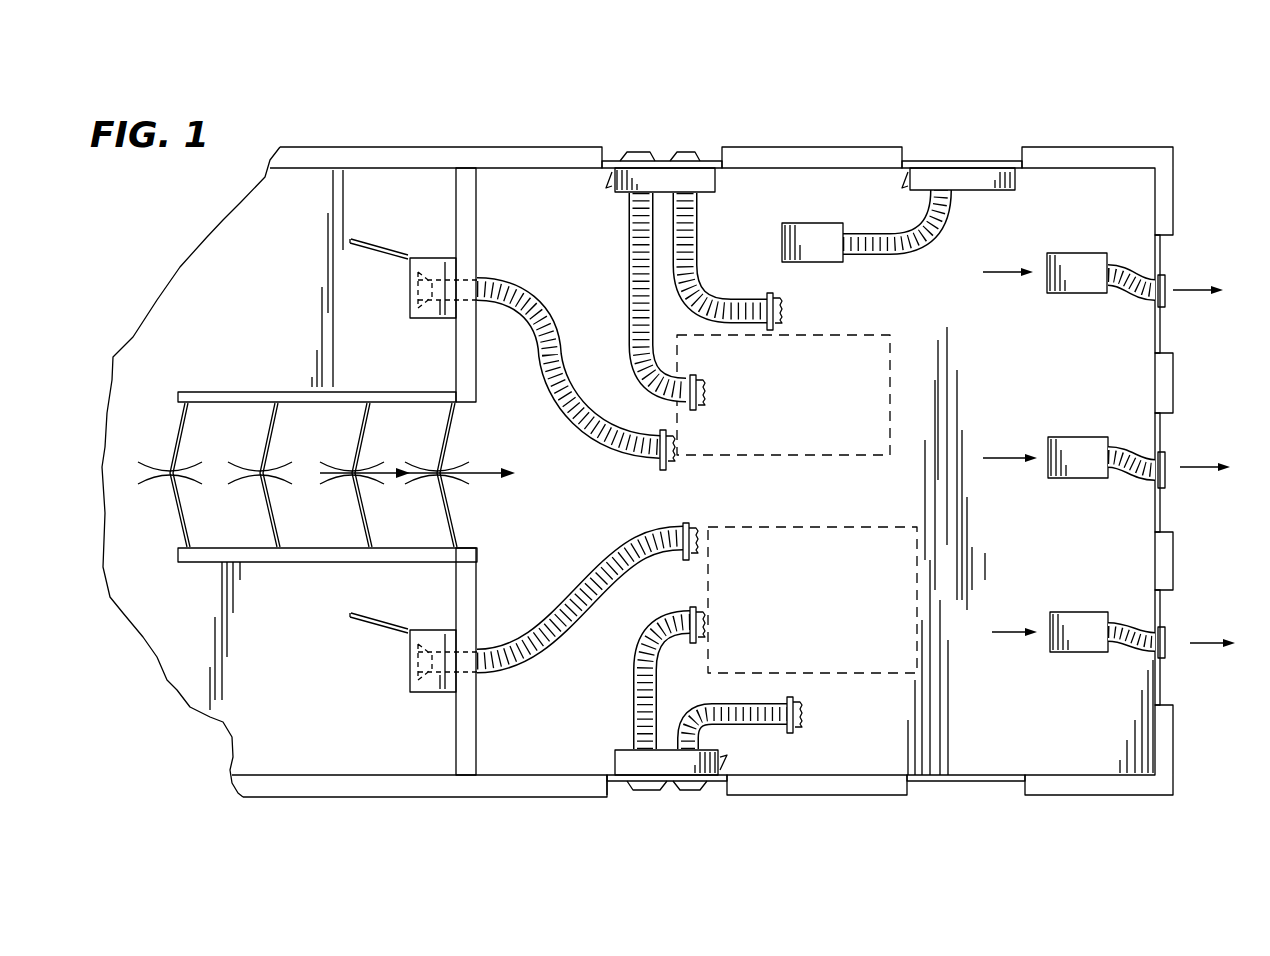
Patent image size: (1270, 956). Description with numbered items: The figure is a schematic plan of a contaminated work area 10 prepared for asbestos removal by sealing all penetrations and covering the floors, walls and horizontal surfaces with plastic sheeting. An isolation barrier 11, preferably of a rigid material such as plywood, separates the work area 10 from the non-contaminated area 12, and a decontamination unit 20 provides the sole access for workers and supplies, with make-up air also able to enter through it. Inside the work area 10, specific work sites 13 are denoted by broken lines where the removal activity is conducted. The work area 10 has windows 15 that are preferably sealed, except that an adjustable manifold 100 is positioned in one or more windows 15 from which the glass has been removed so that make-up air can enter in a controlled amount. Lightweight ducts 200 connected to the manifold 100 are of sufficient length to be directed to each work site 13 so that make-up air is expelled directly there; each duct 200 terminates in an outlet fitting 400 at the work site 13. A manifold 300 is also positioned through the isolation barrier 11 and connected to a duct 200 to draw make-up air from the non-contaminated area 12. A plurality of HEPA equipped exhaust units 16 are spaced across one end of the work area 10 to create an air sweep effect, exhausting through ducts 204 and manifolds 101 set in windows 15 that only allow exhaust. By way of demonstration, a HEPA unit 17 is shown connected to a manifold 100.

The contaminated work area 10 is at (1012, 717).
The isolation barrier 11 is at (467, 205).
The non-contaminated area 12 is at (320, 737).
The work sites 13 is at (833, 402).
The windows 15 is at (705, 150).
The HEPA equipped exhaust units 16 is at (1107, 227).
The HEPA unit 17 is at (830, 247).
The decontamination unit 20 is at (270, 347).
The adjustable manifold 100 is at (660, 172).
The manifolds 101 is at (1160, 247).
The ducts 200 is at (676, 227).
The ducts 204 is at (1130, 283).
The manifold 300 is at (430, 258).
The duct outlet nozzle 400 is at (696, 375).